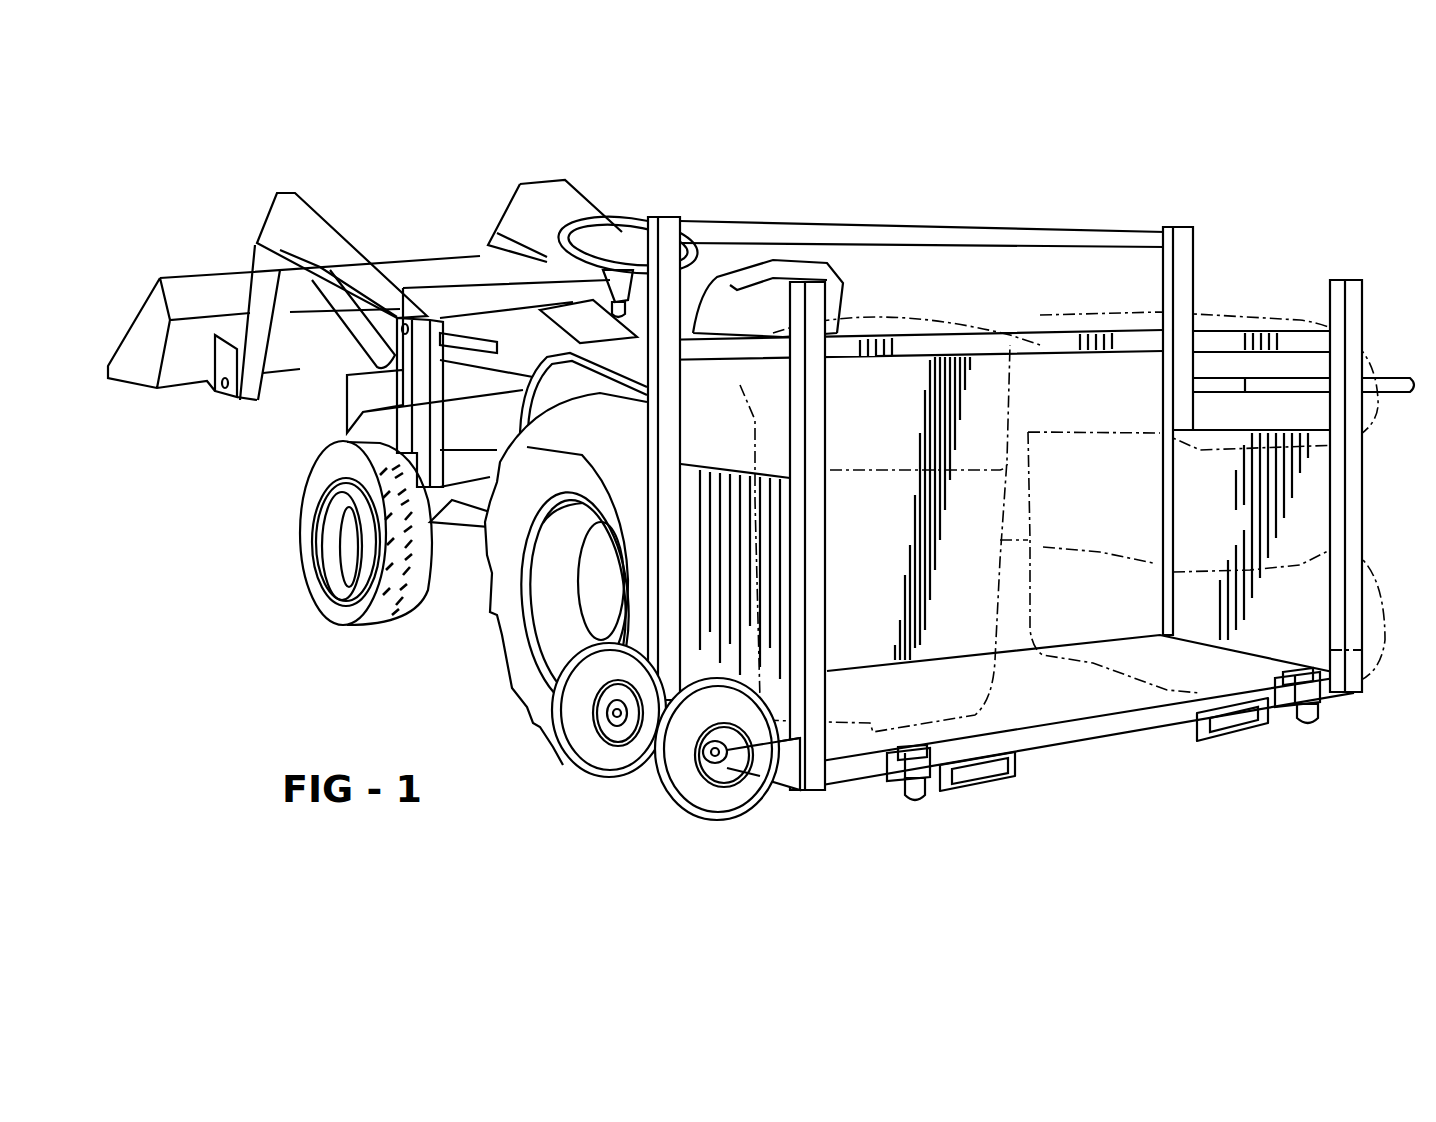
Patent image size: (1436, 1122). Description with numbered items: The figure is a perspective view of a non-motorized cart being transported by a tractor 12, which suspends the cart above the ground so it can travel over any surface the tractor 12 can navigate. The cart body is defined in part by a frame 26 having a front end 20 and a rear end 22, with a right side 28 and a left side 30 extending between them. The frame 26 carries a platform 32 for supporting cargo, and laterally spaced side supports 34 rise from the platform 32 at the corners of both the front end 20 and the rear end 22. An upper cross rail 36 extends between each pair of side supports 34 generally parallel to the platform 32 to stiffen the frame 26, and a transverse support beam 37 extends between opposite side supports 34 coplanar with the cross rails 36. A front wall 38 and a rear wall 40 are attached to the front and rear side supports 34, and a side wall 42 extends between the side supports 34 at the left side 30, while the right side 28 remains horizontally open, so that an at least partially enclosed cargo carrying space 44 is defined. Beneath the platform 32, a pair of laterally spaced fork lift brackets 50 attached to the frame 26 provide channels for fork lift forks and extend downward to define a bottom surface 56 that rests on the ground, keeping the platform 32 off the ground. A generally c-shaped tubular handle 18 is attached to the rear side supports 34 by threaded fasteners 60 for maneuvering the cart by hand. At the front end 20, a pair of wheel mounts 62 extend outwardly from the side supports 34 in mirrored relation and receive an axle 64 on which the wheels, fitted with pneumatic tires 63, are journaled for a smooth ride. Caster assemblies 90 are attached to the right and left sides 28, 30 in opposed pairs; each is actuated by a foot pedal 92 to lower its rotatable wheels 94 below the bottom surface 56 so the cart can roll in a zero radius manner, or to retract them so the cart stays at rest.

The tractor 12 is at (560, 165).
The handle 18 is at (1410, 382).
The front end 20 is at (800, 665).
The rear end 22 is at (1362, 517).
The frame 26 is at (1366, 636).
The right side 28 is at (643, 518).
The left side 30 is at (1355, 533).
The platform 32 is at (1093, 707).
The side supports 34 is at (670, 230).
The upper cross rail 36 is at (712, 355).
The transverse support beam 37 is at (1010, 335).
The front wall 38 is at (700, 485).
The rear wall 40 is at (1310, 575).
The side wall 42 is at (1040, 322).
The cargo carrying space 44 is at (1225, 298).
The fork lift brackets 50 is at (946, 786).
The bottom surface 56 is at (985, 787).
The threaded fasteners 60 is at (1356, 368).
The wheel mounts 62 is at (770, 760).
The pneumatic tires 63 is at (592, 765).
The axle 64 is at (634, 745).
The caster assemblies 90 is at (895, 787).
The foot pedal 92 is at (906, 750).
The rotatable wheels 94 is at (908, 802).